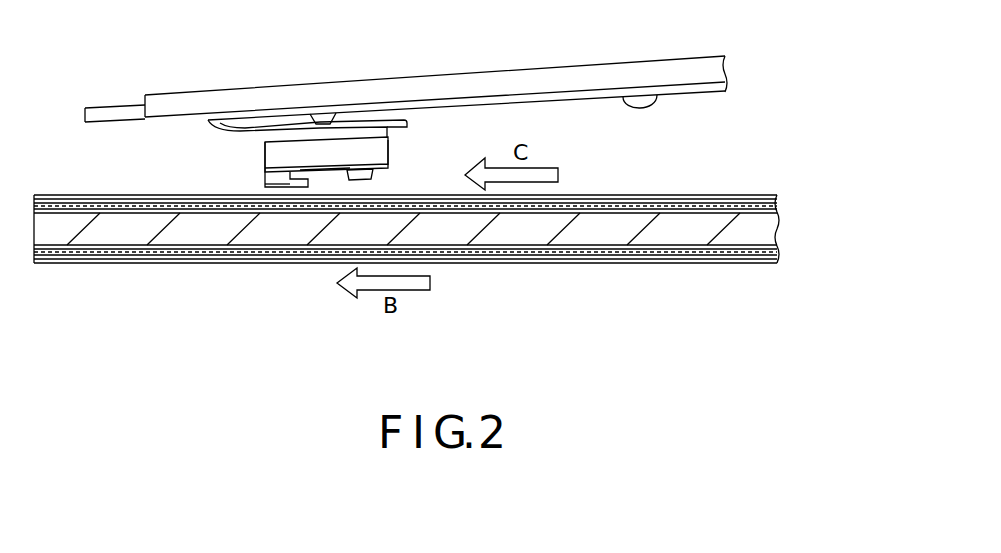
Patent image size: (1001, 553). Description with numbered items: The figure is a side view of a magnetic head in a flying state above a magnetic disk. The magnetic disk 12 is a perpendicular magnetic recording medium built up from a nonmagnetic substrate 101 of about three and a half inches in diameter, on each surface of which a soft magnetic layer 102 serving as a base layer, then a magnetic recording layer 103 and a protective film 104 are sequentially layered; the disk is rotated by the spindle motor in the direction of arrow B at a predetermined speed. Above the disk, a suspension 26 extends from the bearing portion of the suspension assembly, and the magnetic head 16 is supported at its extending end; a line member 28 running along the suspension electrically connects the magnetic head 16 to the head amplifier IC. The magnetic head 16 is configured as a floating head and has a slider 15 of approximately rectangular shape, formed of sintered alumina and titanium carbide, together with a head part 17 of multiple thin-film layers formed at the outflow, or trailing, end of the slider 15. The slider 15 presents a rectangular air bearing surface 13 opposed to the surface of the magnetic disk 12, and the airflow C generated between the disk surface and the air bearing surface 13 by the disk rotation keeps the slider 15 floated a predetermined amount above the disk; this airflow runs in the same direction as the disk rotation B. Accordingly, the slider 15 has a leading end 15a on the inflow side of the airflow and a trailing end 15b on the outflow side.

The magnetic disk 12 is at (450, 211).
The air bearing surface 13 is at (324, 177).
The slider 15 is at (300, 152).
The leading end 15a is at (392, 143).
The trailing end 15b is at (265, 180).
The magnetic head 16 is at (398, 155).
The head part 17 is at (263, 152).
The suspension 26 is at (588, 78).
The line member 28 is at (657, 94).
The substrate 101 is at (655, 235).
The soft magnetic layer 102 is at (775, 210).
The magnetic recording layer 103 is at (693, 200).
The protective film 104 is at (778, 197).